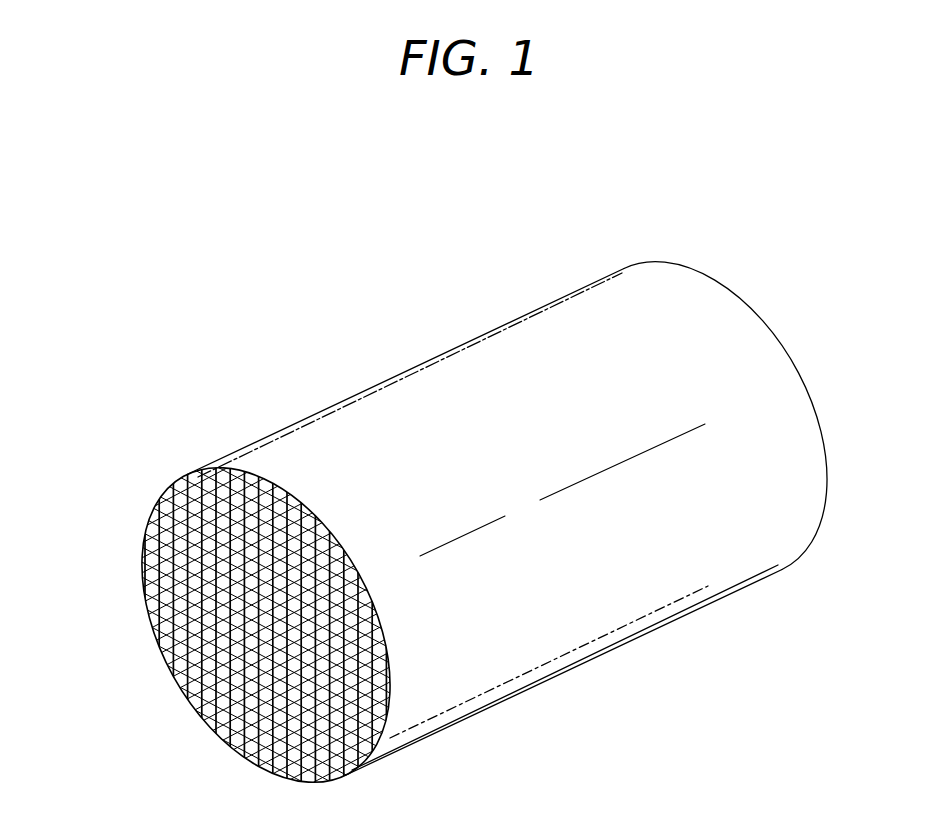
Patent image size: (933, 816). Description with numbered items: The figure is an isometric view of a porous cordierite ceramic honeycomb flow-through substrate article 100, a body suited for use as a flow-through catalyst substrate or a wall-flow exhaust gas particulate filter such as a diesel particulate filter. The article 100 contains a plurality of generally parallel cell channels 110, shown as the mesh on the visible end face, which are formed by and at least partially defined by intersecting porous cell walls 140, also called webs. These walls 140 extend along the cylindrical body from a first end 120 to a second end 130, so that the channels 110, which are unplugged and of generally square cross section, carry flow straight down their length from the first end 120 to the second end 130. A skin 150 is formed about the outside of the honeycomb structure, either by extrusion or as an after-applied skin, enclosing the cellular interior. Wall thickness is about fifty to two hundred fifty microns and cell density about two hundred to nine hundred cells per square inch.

The porous ceramic honeycomb flow-through substrate article 100 is at (829, 497).
The cell channels 110 is at (147, 592).
The first end 120 is at (145, 527).
The second end 130 is at (744, 305).
The cell walls 140 is at (173, 668).
The skin 150 is at (438, 397).